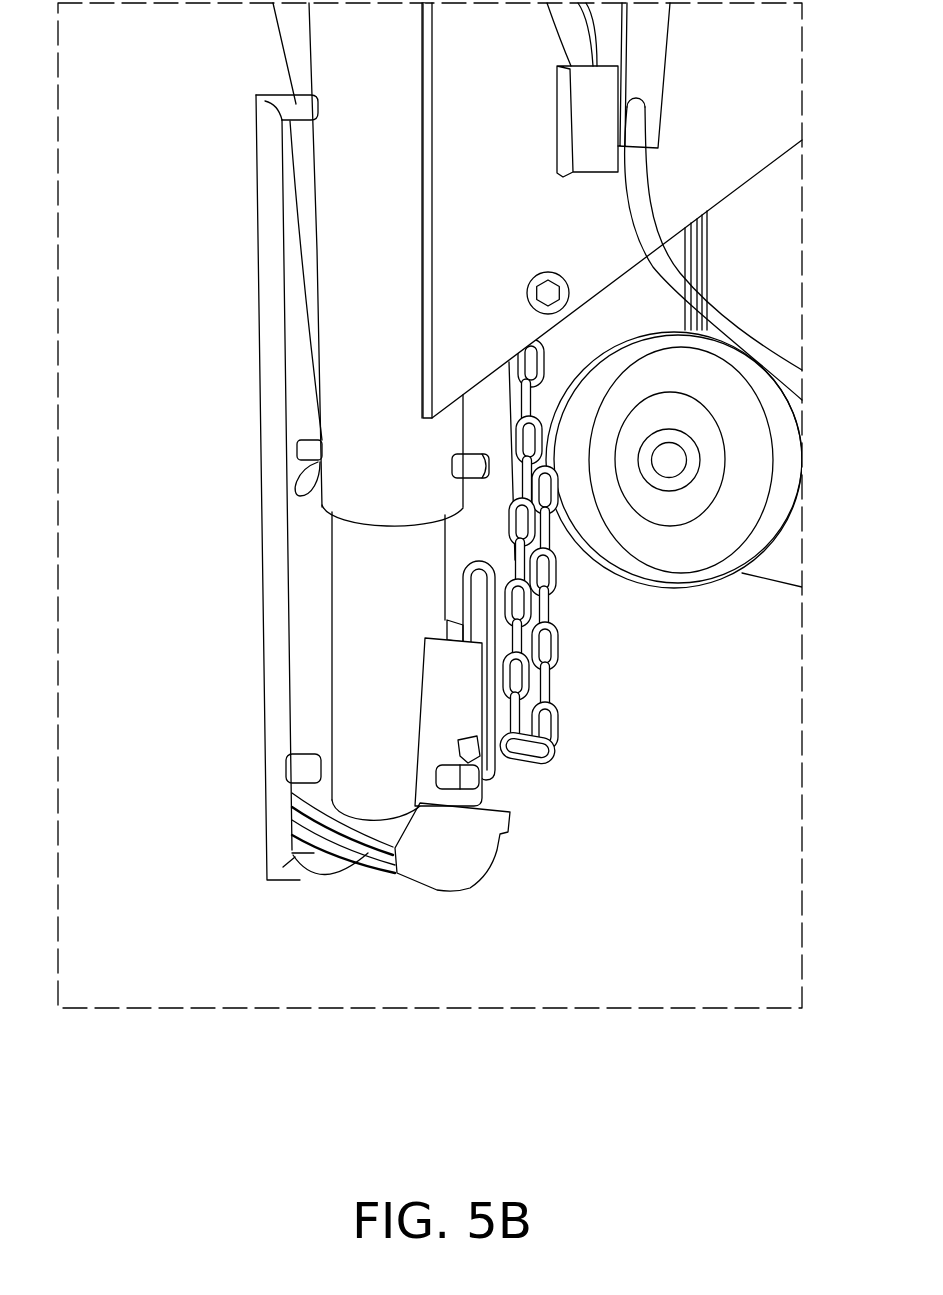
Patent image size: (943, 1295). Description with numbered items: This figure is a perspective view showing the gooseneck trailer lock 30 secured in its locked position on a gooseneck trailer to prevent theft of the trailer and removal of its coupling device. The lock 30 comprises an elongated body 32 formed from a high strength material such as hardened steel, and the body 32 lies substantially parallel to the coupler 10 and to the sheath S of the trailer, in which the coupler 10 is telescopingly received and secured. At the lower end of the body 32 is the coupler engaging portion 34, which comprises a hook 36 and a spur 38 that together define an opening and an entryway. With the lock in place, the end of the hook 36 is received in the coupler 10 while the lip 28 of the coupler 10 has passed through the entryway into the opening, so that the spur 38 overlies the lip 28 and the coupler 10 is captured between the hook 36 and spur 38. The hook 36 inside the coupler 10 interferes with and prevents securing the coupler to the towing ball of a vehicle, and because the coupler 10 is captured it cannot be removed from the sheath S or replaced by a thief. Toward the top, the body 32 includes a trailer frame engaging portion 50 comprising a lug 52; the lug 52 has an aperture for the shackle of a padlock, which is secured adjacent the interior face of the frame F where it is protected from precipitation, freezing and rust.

The coupler 10 is at (295, 642).
The lip 28 is at (363, 884).
The gooseneck trailer lock 30 is at (229, 478).
The elongated body 32 is at (268, 297).
The coupler engaging portion 34 is at (240, 792).
The hook 36 is at (300, 873).
The spur 38 is at (304, 753).
The trailer frame engaging portion 50 is at (230, 99).
The lug 52 is at (295, 102).
The sheath S is at (343, 382).
The frame F is at (720, 107).